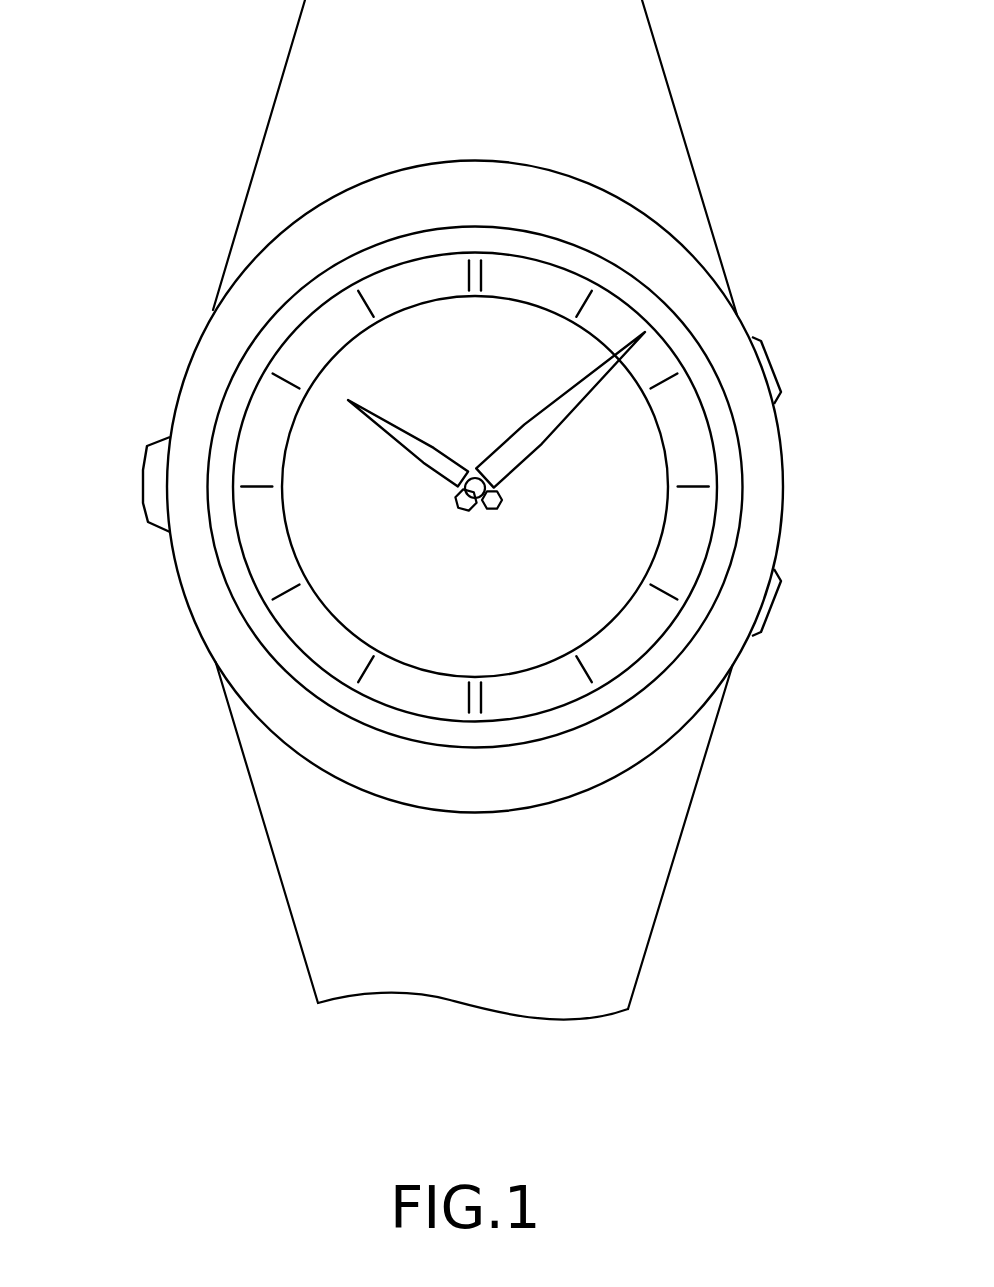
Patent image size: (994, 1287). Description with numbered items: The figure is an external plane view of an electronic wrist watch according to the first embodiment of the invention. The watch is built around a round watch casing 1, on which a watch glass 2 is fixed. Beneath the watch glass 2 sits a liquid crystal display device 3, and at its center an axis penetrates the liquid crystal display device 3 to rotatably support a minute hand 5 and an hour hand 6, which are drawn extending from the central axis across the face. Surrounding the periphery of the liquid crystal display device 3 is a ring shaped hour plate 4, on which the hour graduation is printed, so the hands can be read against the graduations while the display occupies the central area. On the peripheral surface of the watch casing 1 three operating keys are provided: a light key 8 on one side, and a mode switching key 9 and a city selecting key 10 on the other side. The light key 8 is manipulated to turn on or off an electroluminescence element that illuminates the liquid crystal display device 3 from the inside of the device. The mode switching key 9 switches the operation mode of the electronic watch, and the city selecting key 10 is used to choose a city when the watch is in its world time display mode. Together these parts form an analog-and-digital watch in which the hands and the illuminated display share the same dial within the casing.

The watch casing 1 is at (660, 227).
The watch glass 2 is at (683, 325).
The liquid crystal display device 3 is at (633, 460).
The hour plate 4 is at (695, 523).
The minute hand 5 is at (527, 420).
The hour hand 6 is at (418, 457).
The light key 8 is at (143, 477).
The mode switching key 9 is at (777, 605).
The city selecting key 10 is at (777, 370).